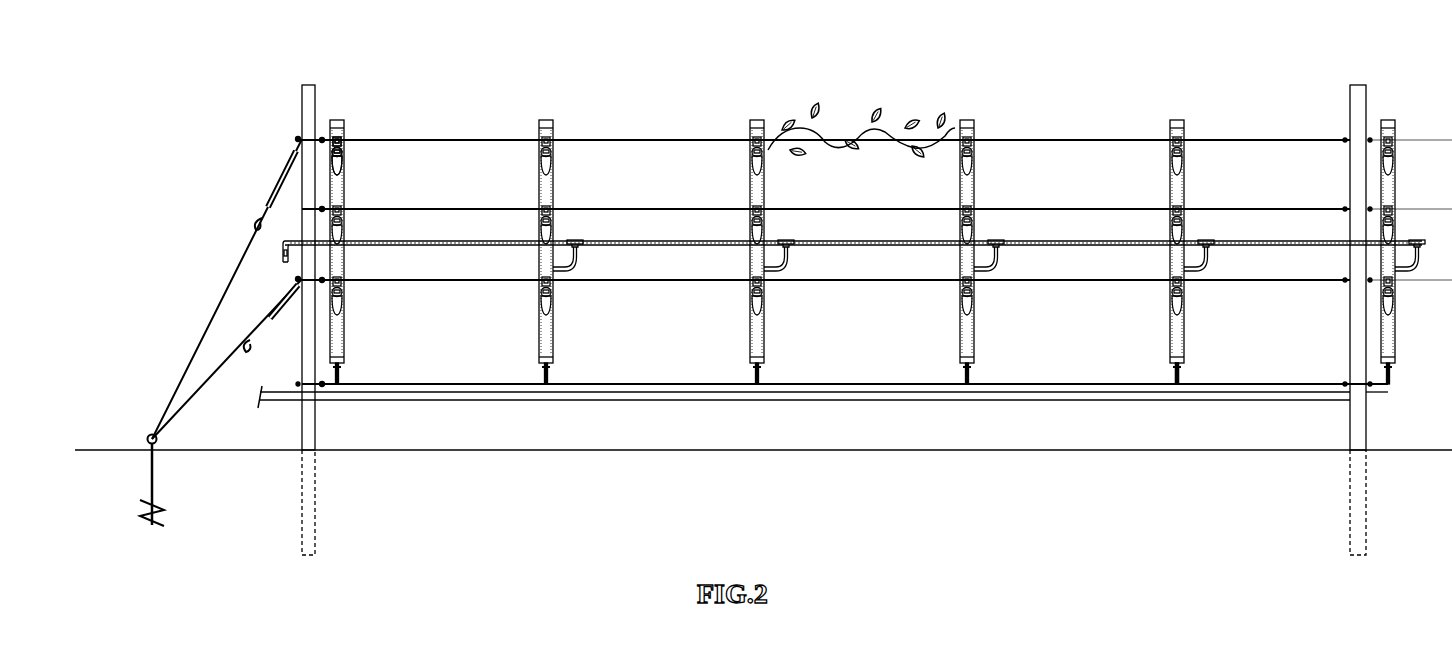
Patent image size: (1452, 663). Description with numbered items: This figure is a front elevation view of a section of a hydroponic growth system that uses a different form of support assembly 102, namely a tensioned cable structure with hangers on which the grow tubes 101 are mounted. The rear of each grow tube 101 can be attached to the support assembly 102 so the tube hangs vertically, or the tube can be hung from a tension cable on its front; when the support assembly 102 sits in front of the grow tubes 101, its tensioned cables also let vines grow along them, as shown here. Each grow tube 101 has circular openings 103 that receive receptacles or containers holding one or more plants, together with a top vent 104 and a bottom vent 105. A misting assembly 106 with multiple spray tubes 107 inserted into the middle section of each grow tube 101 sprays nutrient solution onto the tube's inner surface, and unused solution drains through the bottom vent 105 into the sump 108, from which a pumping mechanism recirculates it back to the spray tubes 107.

The grow tube 101 is at (558, 181).
The support assembly 102 is at (224, 256).
The openings 103 is at (343, 157).
The top vent 104 is at (1185, 124).
The bottom vent 105 is at (1184, 363).
The misting assembly 106 is at (885, 256).
The spray tubes 107 is at (1000, 258).
The sump 108 is at (518, 400).